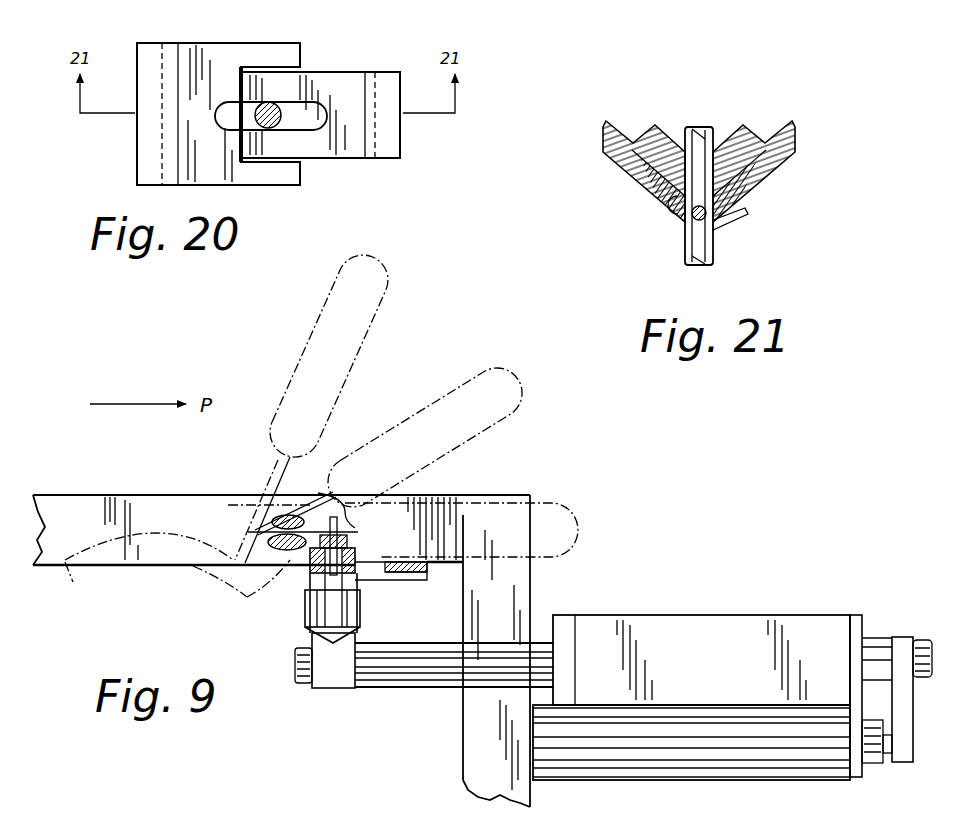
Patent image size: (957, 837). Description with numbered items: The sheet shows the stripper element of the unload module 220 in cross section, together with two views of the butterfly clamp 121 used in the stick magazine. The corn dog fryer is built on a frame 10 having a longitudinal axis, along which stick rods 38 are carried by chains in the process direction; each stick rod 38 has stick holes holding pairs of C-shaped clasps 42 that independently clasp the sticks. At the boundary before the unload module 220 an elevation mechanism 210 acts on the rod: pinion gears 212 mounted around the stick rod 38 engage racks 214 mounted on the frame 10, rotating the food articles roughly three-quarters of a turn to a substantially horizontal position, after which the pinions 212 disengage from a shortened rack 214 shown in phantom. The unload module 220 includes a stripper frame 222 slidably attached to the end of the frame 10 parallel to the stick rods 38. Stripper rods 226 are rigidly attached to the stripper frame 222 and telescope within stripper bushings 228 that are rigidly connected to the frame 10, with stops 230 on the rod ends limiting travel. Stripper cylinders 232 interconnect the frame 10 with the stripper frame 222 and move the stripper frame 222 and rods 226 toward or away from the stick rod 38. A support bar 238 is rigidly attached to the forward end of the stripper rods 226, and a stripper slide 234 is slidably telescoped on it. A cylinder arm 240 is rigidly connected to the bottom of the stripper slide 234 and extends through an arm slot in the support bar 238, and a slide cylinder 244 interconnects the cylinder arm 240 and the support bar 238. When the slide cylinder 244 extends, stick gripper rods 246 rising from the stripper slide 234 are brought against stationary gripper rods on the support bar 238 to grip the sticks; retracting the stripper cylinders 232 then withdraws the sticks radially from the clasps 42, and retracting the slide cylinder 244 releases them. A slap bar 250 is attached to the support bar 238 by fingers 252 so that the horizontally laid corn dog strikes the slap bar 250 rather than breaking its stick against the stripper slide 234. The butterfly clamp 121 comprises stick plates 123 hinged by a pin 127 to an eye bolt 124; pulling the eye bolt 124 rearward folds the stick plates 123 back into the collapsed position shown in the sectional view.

In FIG. 9, the frame 10 is at (463, 762).
In FIG. 9, the stick rod 38 is at (273, 518).
In FIG. 9, the clasp 42 is at (325, 505).
In FIG. 20, the butterfly clamp 121 is at (340, 46).
In FIG. 21, the butterfly clamp 121 is at (662, 223).
In FIG. 20, the stick plate 123 is at (275, 17).
In FIG. 21, the stick plate 123 is at (632, 185).
In FIG. 20, the eye bolt 124 is at (273, 128).
In FIG. 21, the eye bolt 124 is at (702, 130).
In FIG. 21, the pin 127 is at (722, 240).
In FIG. 9, the elevation mechanism 210 is at (220, 599).
In FIG. 9, the pinion gear 212 is at (297, 587).
In FIG. 9, the rack 214 is at (73, 582).
In FIG. 9, the unload module 220 is at (534, 472).
In FIG. 9, the stripper frame 222 is at (930, 608).
In FIG. 9, the stripper rod 226 is at (430, 692).
In FIG. 9, the stripper bushing 228 is at (715, 665).
In FIG. 9, the stop 230 is at (878, 638).
In FIG. 9, the stripper cylinder 232 is at (693, 780).
In FIG. 9, the stripper slide 234 is at (345, 528).
In FIG. 9, the support bar 238 is at (365, 552).
In FIG. 9, the cylinder arm 240 is at (357, 585).
In FIG. 9, the slide cylinder 244 is at (360, 620).
In FIG. 9, the stick gripper rod 246 is at (345, 505).
In FIG. 9, the slap bar 250 is at (423, 562).
In FIG. 9, the finger 252 is at (423, 583).